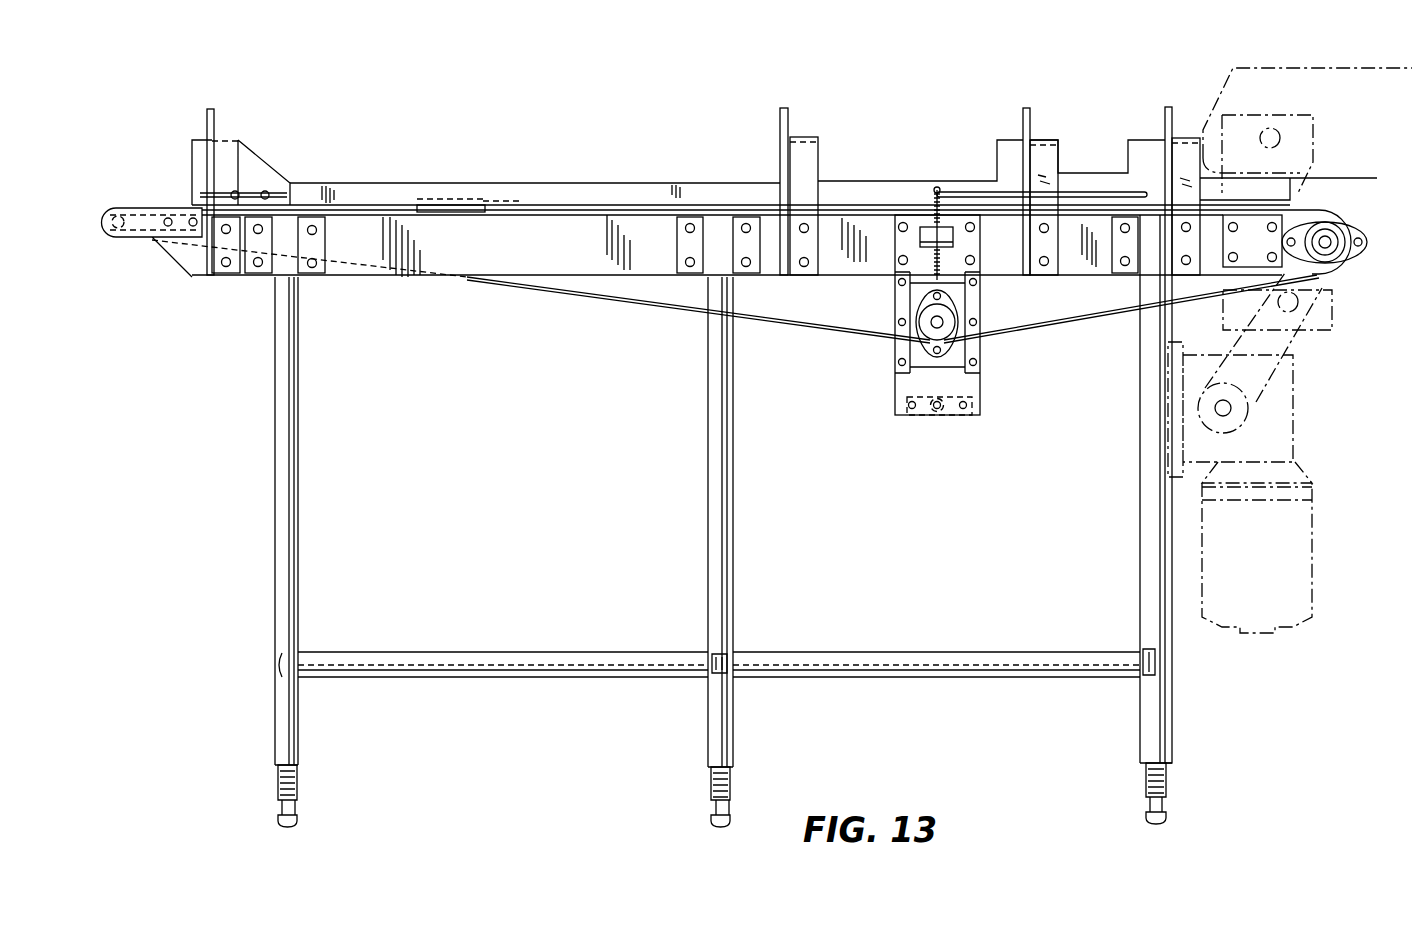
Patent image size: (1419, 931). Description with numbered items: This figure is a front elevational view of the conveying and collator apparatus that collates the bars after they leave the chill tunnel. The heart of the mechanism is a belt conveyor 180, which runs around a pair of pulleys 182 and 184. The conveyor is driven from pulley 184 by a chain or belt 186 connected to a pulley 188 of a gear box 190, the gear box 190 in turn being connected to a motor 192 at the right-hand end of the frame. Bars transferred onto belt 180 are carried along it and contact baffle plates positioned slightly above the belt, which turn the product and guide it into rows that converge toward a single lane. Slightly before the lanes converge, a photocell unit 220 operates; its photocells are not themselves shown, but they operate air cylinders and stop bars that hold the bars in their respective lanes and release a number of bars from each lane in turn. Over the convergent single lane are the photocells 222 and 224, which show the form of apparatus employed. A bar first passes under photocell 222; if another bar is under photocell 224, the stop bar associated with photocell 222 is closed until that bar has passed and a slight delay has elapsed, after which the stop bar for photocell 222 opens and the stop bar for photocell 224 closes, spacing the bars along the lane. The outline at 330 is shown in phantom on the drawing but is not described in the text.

The belt conveyor 180 is at (570, 291).
The pulley 182 is at (110, 243).
The pulley 184 is at (1345, 263).
The chain or belt 186 is at (1300, 340).
The pulley 188 is at (1247, 421).
The gear box 190 is at (1295, 402).
The motor 192 is at (1312, 555).
The photocell unit 220 is at (807, 152).
The photocell 222 is at (1009, 151).
The photocell 224 is at (1140, 144).
The housing 330 is at (1263, 82).